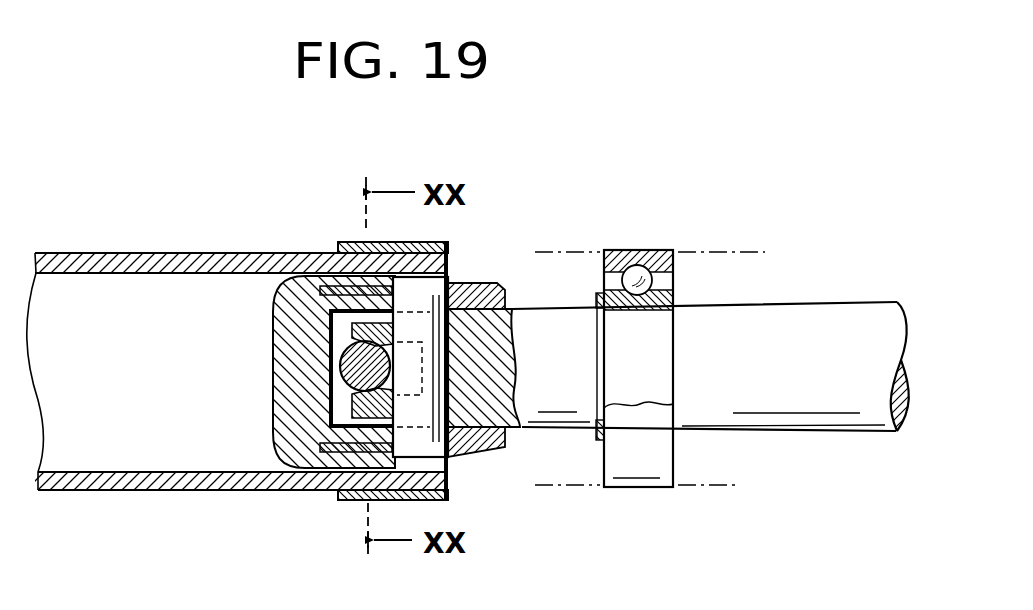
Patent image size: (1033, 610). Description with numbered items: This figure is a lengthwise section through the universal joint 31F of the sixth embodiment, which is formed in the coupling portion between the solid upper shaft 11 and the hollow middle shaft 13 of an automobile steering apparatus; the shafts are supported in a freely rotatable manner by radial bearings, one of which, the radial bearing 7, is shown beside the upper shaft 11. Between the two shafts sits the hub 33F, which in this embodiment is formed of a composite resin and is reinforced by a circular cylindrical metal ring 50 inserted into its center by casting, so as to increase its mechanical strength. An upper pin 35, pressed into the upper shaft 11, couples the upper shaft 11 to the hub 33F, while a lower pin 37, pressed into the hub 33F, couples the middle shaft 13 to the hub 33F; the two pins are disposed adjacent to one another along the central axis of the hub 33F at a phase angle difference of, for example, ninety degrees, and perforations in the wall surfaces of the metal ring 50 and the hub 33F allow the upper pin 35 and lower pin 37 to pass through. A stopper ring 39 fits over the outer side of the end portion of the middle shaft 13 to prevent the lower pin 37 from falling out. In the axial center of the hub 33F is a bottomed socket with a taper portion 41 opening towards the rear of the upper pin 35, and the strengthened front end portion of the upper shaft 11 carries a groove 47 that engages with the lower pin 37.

The radial bearing 7 is at (642, 467).
The upper shaft 11 is at (825, 308).
The middle shaft 13 is at (92, 258).
The universal joint 31F is at (489, 228).
The hub 33F is at (295, 425).
The upper pin 35 is at (432, 293).
The lower pin 37 is at (363, 370).
The stopper ring 39 is at (353, 500).
The taper portion 41 is at (332, 317).
The groove 47 is at (394, 386).
The metal ring 50 is at (330, 278).